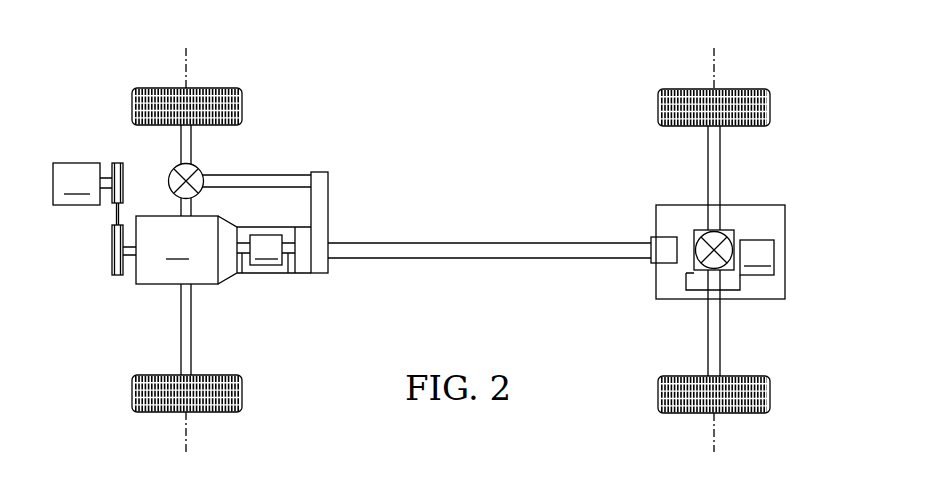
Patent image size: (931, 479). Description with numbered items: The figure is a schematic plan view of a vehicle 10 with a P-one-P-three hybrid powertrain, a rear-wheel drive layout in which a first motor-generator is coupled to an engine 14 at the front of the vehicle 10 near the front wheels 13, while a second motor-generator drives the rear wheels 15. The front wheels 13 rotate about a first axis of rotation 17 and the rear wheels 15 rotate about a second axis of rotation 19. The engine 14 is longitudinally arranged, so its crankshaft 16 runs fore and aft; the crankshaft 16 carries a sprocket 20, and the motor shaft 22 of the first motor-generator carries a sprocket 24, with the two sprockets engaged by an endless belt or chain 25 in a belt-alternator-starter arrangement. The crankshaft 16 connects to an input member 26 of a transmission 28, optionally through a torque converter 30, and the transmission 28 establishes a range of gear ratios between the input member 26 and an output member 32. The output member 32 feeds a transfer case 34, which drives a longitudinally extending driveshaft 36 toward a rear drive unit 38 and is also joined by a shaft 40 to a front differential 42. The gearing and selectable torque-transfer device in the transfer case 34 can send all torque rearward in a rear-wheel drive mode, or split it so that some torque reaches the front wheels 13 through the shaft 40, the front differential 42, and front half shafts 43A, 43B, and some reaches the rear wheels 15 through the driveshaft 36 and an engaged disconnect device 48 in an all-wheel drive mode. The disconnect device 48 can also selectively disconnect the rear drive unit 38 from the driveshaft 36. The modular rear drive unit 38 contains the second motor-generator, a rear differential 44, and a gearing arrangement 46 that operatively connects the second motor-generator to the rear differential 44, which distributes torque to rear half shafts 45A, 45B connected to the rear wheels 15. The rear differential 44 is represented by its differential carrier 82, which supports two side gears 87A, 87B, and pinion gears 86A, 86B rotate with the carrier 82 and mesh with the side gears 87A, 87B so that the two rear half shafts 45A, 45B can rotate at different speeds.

The vehicle 10 is at (503, 108).
The front wheels 13 is at (214, 90).
The engine 14 is at (177, 250).
The rear wheels 15 is at (740, 90).
The crankshaft 16 is at (128, 258).
The first axis of rotation 17 is at (187, 63).
The second axis of rotation 19 is at (717, 60).
The sprocket 20 is at (110, 262).
The motor shaft 22 is at (110, 172).
The sprocket 24 is at (124, 193).
The belt or chain 25 is at (112, 215).
The input member 26 is at (242, 265).
The transmission 28 is at (266, 250).
The torque converter 30 is at (229, 283).
The output member 32 is at (288, 265).
The transfer case 34 is at (313, 263).
The driveshaft 36 is at (490, 262).
The rear drive unit 38 is at (778, 205).
The shaft 40 is at (262, 175).
The front differential 42 is at (204, 177).
The front half shaft 43A is at (181, 144).
The front half shaft 43B is at (178, 330).
The rear differential 44 is at (728, 245).
The rear half shaft 45A is at (706, 160).
The rear half shaft 45B is at (706, 338).
The gearing arrangement 46 is at (748, 205).
The disconnect device 48 is at (660, 265).
The differential carrier 82 is at (732, 232).
The pinion gear 86A is at (700, 250).
The pinion gear 86B is at (734, 260).
The side gear 87A is at (712, 232).
The side gear 87B is at (712, 270).